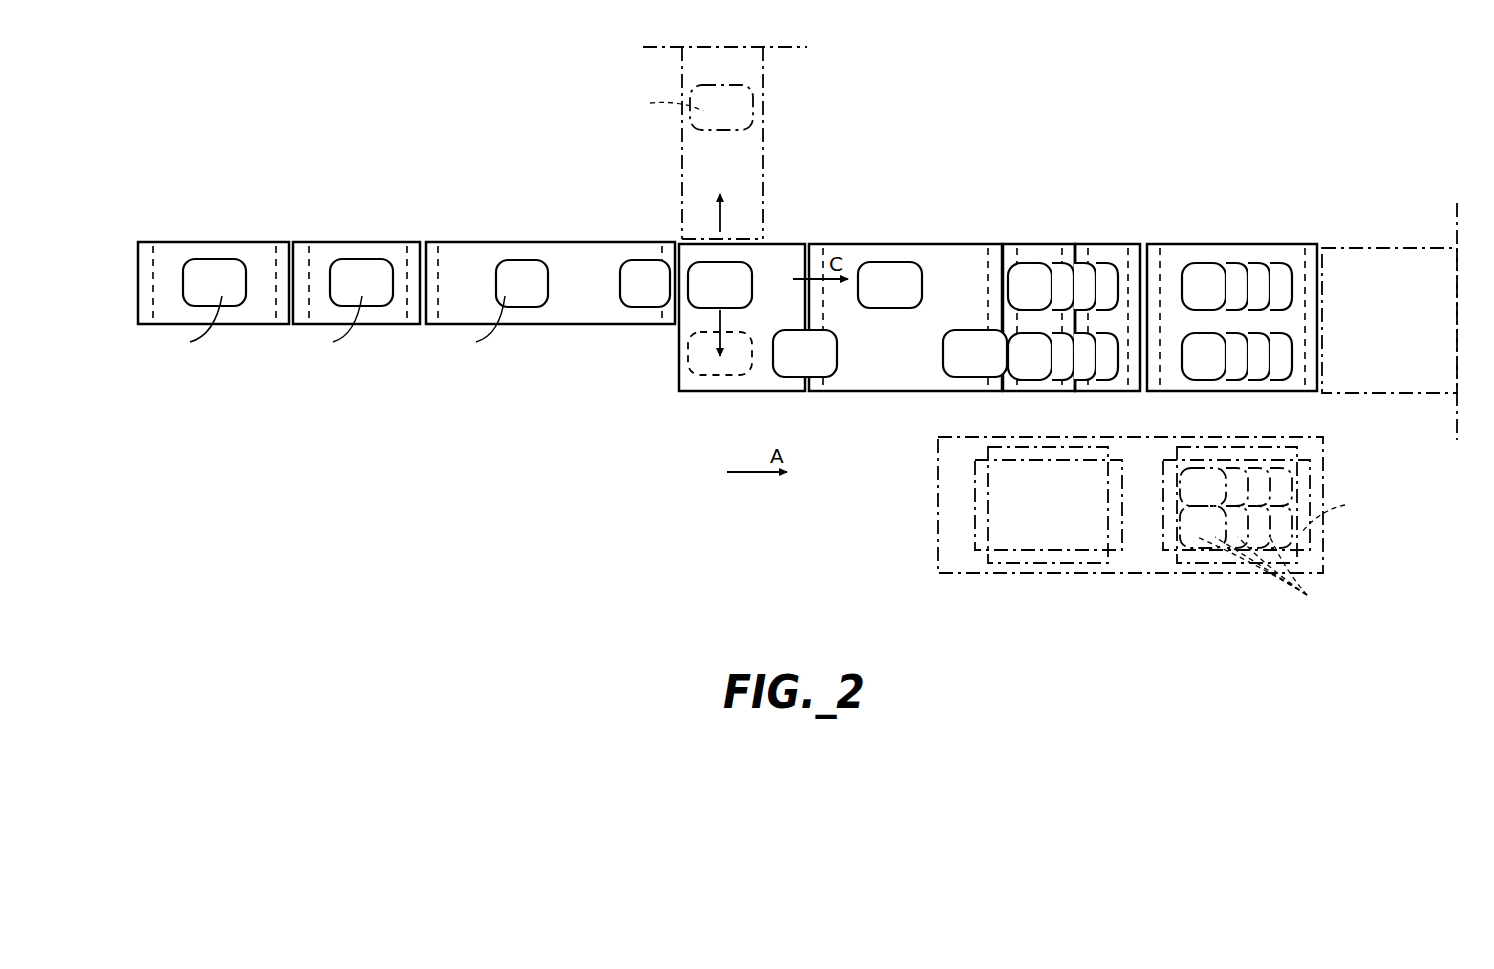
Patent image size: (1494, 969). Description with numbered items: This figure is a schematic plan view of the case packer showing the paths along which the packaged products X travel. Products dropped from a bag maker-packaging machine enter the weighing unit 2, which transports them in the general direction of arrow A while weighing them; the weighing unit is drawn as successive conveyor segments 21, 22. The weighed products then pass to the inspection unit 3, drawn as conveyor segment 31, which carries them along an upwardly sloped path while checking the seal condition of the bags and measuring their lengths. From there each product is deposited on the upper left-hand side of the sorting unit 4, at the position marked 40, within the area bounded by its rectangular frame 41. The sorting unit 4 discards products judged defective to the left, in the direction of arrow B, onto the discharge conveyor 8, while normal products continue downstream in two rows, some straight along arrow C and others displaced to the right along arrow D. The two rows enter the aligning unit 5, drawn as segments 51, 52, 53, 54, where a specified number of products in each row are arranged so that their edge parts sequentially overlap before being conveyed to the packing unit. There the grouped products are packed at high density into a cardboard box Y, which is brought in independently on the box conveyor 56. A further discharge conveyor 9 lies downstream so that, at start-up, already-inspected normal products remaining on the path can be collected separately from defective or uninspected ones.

The weighing unit 2 is at (276, 212).
The inspection unit 3 is at (484, 212).
The sorting unit 4 is at (688, 407).
The aligning unit 5 is at (1204, 216).
The discharge conveyor 8 is at (690, 190).
The discharge conveyor 9 is at (1370, 252).
The conveyor segment 21 is at (223, 248).
The conveyor segment 22 is at (368, 248).
The conveyor segment 31 is at (587, 250).
The product deposit position 40 is at (750, 260).
The rectangular frame 41 is at (730, 378).
The conveyor segment 51 is at (900, 250).
The stacking segment 52 is at (1034, 252).
The stacking segment 53 is at (1108, 252).
The conveyor segment 54 is at (1252, 252).
The box conveyor 56 is at (1147, 567).